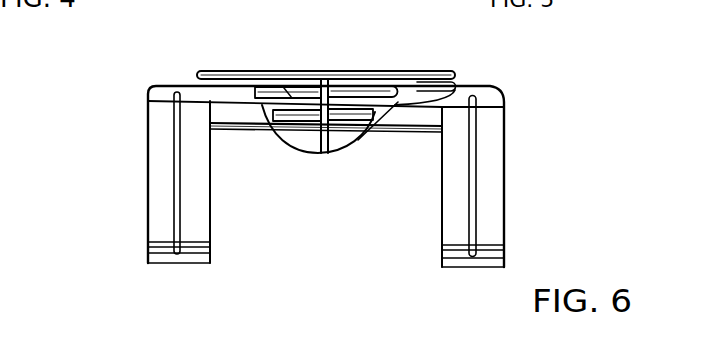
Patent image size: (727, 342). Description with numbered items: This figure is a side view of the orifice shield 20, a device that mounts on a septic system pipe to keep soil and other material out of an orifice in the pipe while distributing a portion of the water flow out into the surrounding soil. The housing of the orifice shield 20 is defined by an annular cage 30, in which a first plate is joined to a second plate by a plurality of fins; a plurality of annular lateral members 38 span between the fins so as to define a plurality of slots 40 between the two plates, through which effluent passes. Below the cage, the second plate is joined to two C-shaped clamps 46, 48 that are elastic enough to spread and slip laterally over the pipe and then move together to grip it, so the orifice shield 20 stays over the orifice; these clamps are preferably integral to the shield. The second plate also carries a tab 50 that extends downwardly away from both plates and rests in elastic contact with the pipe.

The orifice shield 20 is at (339, 169).
The annular cage 30 is at (252, 78).
The annular lateral members 38 is at (320, 152).
The slots 40 is at (393, 90).
The C-shaped clamp 46 is at (150, 183).
The C-shaped clamp 48 is at (500, 190).
The tab 50 is at (345, 140).